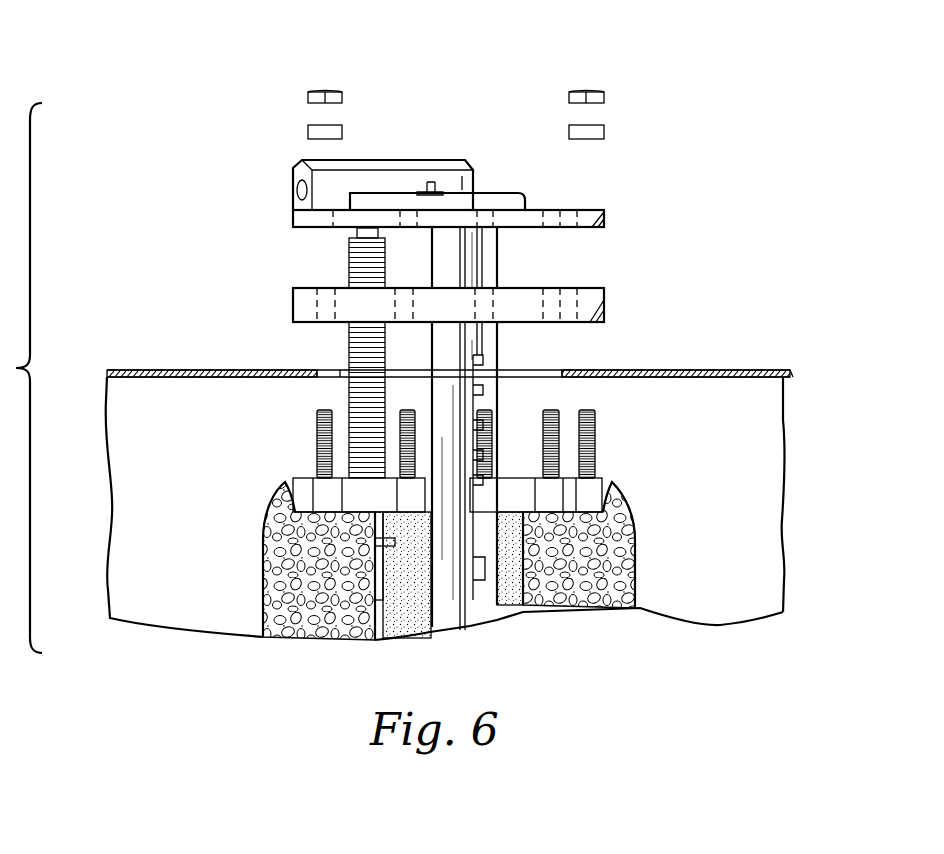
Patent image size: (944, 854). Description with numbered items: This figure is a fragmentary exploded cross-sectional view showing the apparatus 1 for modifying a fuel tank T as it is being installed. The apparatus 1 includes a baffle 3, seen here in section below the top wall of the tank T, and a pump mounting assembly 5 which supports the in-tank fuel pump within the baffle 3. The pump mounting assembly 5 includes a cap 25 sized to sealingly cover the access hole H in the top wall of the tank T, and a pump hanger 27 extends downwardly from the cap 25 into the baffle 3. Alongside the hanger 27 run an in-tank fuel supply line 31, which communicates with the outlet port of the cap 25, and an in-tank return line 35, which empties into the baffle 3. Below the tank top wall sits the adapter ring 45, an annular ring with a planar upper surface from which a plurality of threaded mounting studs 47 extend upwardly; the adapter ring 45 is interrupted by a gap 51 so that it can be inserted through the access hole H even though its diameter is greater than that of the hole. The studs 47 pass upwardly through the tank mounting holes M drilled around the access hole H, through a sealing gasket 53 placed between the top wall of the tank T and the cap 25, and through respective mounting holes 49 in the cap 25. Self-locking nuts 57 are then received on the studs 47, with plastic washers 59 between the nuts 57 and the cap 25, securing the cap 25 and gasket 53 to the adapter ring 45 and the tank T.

The apparatus for modifying a fuel tank 1 is at (738, 150).
The baffle 3 is at (638, 546).
The pump mounting assembly 5 is at (497, 185).
The cap 25 is at (446, 160).
The pump hanger 27 is at (497, 267).
The in-tank fuel supply line 31 is at (432, 281).
The in-tank return line 35 is at (348, 265).
The adapter ring 45 is at (605, 480).
The threaded mounting studs 47 is at (316, 428).
The mounting hole 49 is at (320, 218).
The gap 51 is at (432, 498).
The sealing gasket 53 is at (606, 303).
The self-locking nuts 57 is at (340, 90).
The plastic washers 59 is at (305, 130).
The tank mounting holes M is at (322, 371).
The access hole H is at (560, 372).
The fuel tank T is at (783, 370).